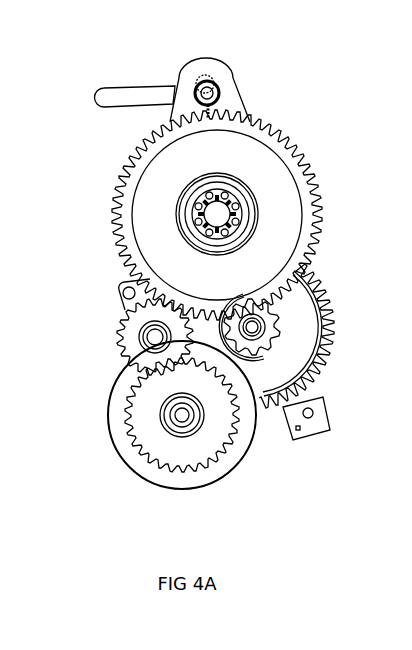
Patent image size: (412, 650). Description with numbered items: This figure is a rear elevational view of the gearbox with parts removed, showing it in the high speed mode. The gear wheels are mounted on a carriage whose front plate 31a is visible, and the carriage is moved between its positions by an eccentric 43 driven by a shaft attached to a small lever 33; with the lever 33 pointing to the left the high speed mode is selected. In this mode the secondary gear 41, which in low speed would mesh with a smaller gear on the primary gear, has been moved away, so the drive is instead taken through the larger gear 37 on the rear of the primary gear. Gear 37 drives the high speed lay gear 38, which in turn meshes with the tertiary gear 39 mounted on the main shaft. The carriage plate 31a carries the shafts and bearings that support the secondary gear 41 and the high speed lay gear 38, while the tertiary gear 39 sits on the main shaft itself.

The front plate of the carriage 31a is at (227, 93).
The lever 33 is at (115, 106).
The gear 37 is at (205, 443).
The high speed lay gear 38 is at (120, 332).
The tertiary gear 39 is at (290, 143).
The secondary gear 41 is at (304, 313).
The eccentric 43 is at (207, 77).